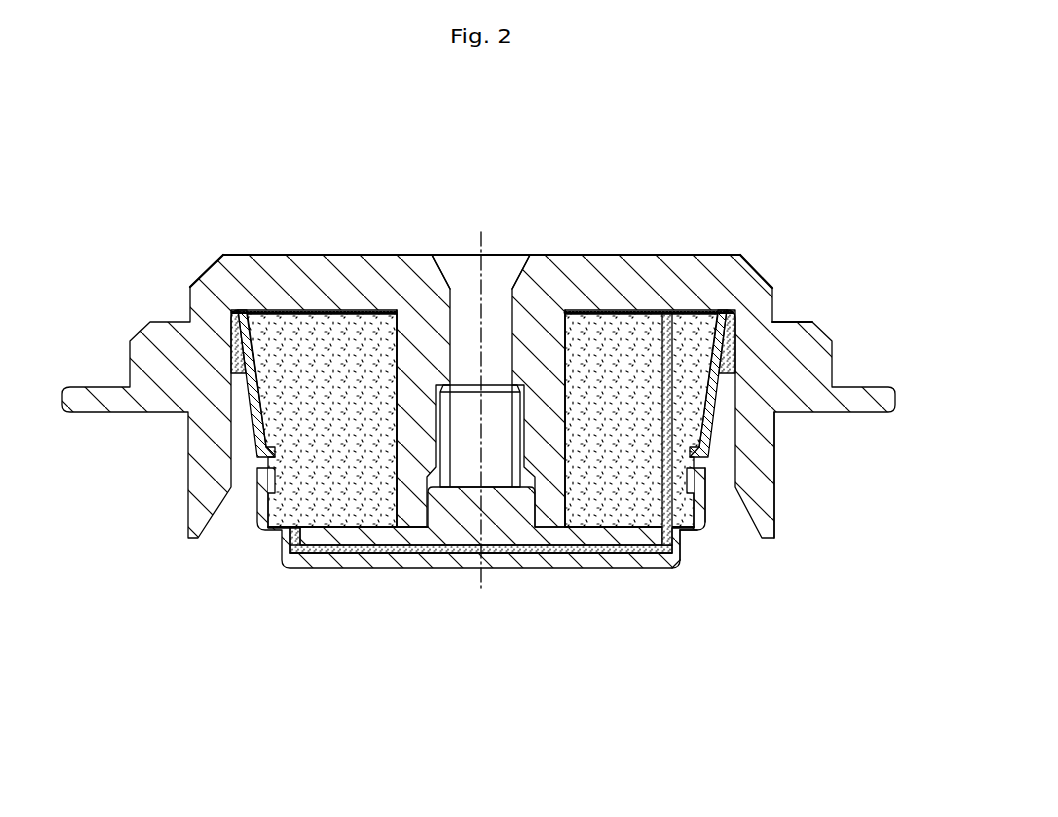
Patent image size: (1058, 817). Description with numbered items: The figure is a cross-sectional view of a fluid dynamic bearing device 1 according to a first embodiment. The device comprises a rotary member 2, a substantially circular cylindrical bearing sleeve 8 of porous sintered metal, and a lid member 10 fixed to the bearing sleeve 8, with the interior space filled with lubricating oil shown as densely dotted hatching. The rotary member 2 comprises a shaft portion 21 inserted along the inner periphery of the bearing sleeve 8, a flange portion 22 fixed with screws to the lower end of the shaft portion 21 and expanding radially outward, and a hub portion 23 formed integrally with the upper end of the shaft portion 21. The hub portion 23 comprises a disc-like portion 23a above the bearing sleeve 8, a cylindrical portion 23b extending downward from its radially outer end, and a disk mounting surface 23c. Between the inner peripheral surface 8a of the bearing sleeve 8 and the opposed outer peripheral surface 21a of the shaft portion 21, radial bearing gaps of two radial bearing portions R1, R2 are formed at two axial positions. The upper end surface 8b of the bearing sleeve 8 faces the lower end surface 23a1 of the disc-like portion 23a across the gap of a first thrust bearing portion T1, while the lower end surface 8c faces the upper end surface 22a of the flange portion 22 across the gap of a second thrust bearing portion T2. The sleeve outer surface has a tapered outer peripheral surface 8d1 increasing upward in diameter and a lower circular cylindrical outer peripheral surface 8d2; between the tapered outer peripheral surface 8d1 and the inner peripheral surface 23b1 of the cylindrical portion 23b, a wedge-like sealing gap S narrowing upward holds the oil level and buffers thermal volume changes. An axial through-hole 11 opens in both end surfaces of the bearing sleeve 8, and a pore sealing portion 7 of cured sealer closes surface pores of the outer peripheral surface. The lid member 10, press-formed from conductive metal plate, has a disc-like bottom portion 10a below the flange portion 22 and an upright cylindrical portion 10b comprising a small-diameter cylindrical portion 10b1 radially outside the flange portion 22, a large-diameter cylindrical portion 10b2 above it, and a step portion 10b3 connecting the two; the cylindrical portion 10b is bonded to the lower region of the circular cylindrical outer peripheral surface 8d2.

The fluid dynamic bearing device 1 is at (604, 192).
The rotary member 2 is at (503, 253).
The pore sealing portion 7 is at (250, 423).
The bearing sleeve 8 is at (690, 331).
The inner peripheral surface 8a is at (575, 450).
The upper end surface 8b is at (305, 310).
The lower end surface 8c is at (325, 551).
The tapered outer peripheral surface 8d1 is at (393, 387).
The circular cylindrical outer peripheral surface 8d2 is at (256, 508).
The lid member 10 is at (424, 569).
The bottom portion 10a is at (466, 568).
The cylindrical portion 10b is at (812, 553).
The small-diameter cylindrical portion 10b1 is at (679, 557).
The large-diameter cylindrical portion 10b2 is at (704, 508).
The step portion 10b3 is at (681, 540).
The axial through-hole 11 is at (668, 358).
The shaft portion 21 is at (553, 350).
The outer peripheral surface 21a is at (396, 340).
The flange portion 22 is at (514, 534).
The upper end surface 22a is at (382, 528).
The hub portion 23 is at (643, 253).
The disc-like portion 23a is at (282, 267).
The lower end surface 23a1 is at (354, 309).
The cylindrical portion 23b is at (762, 490).
The inner peripheral surface 23b1 is at (740, 428).
The disk mounting surface 23c is at (798, 321).
The sealing gap S is at (231, 355).
The radial bearing portion R1 is at (236, 340).
The radial bearing portion R2 is at (393, 469).
The first thrust bearing portion T1 is at (614, 307).
The second thrust bearing portion T2 is at (350, 547).